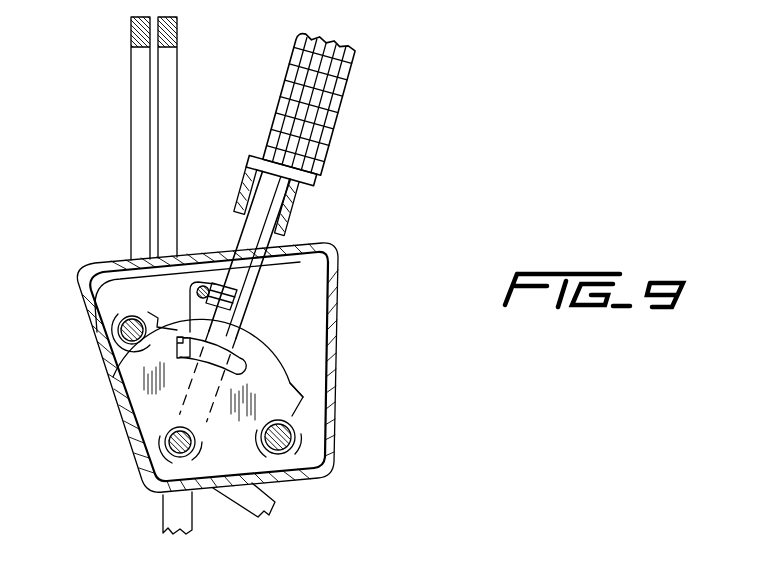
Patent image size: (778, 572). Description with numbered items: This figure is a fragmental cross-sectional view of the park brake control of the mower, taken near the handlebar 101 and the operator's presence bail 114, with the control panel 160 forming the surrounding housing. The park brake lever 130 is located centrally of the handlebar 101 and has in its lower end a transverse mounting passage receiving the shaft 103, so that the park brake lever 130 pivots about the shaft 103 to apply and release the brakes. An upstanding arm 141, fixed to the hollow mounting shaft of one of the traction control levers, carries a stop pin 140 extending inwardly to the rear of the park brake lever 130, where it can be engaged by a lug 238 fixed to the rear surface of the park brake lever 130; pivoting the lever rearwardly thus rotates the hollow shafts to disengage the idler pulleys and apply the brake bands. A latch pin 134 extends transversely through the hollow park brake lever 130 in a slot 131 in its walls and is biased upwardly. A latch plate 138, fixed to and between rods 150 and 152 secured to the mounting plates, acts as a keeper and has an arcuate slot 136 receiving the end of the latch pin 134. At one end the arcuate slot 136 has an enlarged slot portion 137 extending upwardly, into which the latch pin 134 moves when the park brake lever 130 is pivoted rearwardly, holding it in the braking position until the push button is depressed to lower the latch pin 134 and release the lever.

The handlebar 101 is at (178, 35).
The shaft 103 is at (166, 456).
The operator's presence bail 114 is at (131, 34).
The park brake lever 130 is at (330, 103).
The slot 131 is at (207, 377).
The latch pin 134 is at (245, 372).
The arcuate slot 136 is at (243, 363).
The enlarged slot portion 137 is at (200, 343).
The latch plate 138 is at (277, 380).
The stop pin 140 is at (203, 286).
The upstanding arm 141 is at (193, 285).
The rod 150 is at (120, 316).
The rod 152 is at (297, 433).
The control panel 160 is at (337, 281).
The lug 238 is at (237, 302).